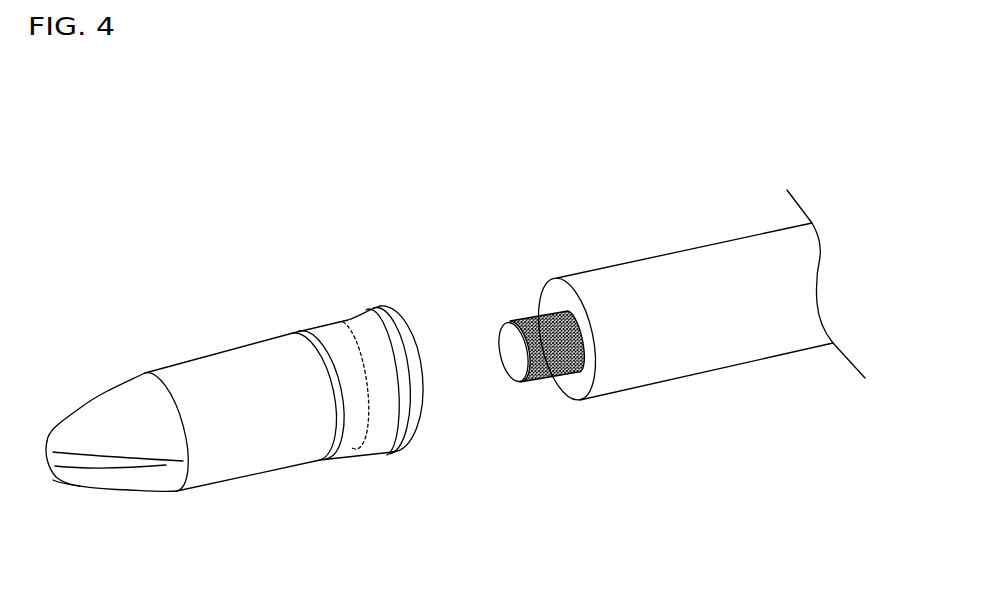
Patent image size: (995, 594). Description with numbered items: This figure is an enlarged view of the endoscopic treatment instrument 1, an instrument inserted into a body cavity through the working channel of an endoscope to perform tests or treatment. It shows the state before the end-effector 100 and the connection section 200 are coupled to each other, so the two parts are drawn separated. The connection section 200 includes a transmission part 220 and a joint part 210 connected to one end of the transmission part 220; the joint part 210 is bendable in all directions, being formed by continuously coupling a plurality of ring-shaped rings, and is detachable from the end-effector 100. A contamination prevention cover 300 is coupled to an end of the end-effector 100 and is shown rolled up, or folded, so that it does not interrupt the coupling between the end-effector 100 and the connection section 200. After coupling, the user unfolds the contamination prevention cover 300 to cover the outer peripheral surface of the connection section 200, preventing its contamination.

The endoscopic treatment instrument 1 is at (640, 153).
The end-effector 100 is at (247, 460).
The connection section 200 is at (710, 239).
The joint part 210 is at (540, 383).
The transmission part 220 is at (673, 370).
The contamination prevention cover 300 is at (349, 322).